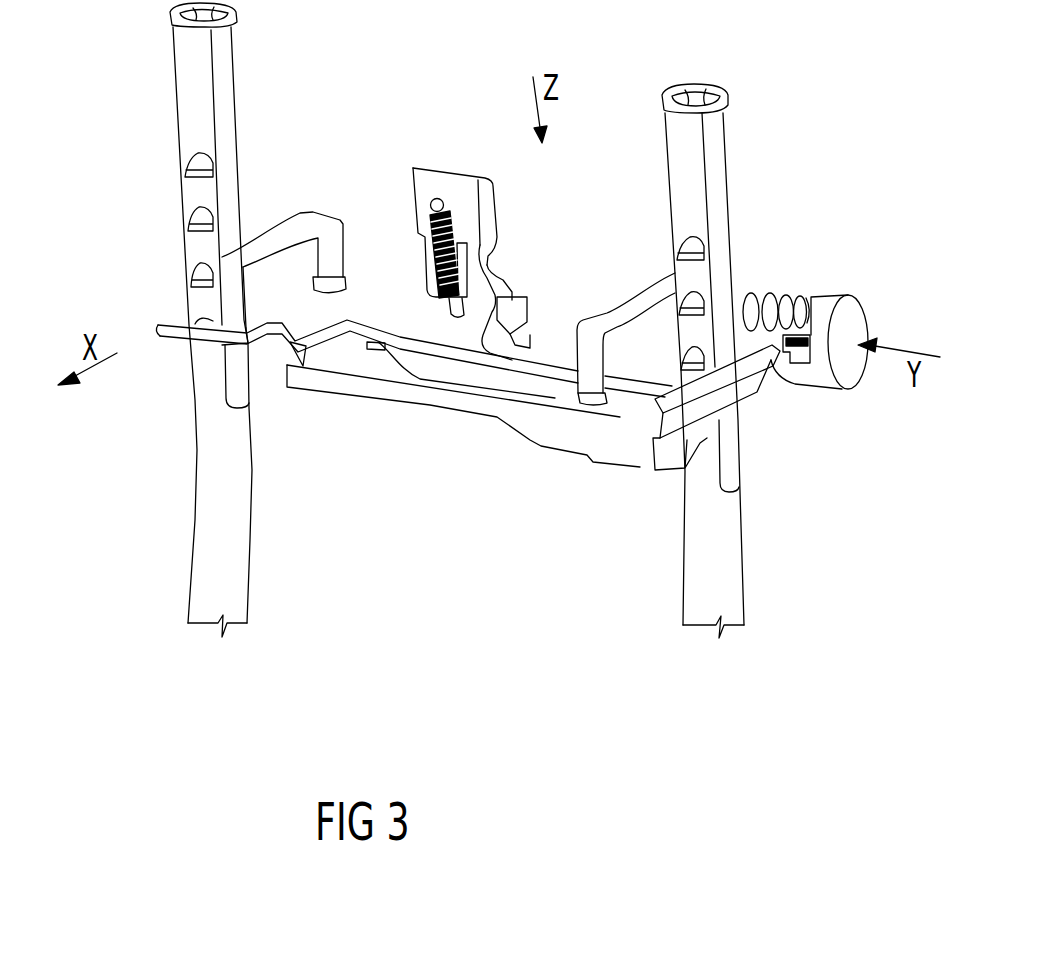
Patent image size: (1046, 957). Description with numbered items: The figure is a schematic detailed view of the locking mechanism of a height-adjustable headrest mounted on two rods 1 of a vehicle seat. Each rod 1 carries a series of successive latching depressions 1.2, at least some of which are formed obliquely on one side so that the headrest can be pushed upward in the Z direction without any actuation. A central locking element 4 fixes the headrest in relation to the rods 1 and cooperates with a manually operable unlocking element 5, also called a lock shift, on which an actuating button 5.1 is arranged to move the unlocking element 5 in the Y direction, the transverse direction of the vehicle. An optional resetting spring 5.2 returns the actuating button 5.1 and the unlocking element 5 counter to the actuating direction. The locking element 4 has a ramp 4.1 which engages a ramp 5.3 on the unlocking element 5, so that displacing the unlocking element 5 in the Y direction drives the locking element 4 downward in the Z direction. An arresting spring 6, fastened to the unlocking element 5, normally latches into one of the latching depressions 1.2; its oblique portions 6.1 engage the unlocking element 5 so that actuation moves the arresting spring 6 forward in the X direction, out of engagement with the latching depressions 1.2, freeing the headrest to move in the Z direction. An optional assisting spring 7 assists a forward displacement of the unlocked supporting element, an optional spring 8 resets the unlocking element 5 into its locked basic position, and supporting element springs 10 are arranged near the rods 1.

The rods 1 is at (192, 108).
The latching depressions 1.2 is at (187, 225).
The locking element 4 is at (448, 187).
The ramp 4.1 is at (473, 343).
The unlocking element 5 is at (683, 420).
The actuating button 5.1 is at (860, 315).
The resetting spring 5.2 is at (777, 288).
The ramp 5.3 is at (517, 356).
The arresting spring 6 is at (337, 353).
The oblique portions 6.1 is at (290, 353).
The assisting spring 7 is at (457, 383).
The spring 8 is at (433, 220).
The supporting element springs 10 is at (305, 223).